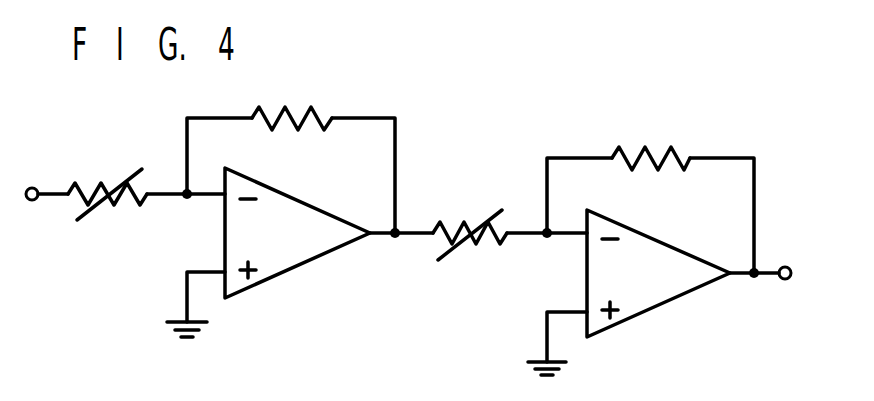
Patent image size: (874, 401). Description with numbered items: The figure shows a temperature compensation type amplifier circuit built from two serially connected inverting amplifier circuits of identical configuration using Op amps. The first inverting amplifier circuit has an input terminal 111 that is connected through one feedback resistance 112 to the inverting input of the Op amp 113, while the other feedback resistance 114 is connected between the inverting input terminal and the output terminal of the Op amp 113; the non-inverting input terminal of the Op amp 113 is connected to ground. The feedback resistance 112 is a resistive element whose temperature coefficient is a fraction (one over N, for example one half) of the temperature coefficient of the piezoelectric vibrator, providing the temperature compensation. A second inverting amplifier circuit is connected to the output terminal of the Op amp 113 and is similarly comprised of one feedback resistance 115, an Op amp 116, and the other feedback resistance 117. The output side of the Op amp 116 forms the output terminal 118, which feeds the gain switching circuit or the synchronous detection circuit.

The input terminal 111 is at (32, 188).
The feedback resistance 112 is at (112, 208).
The Op amp 113 is at (285, 273).
The feedback resistance 114 is at (288, 108).
The feedback resistance 115 is at (475, 250).
The Op amp 116 is at (655, 310).
The feedback resistance 117 is at (645, 148).
The output terminal 118 is at (785, 280).